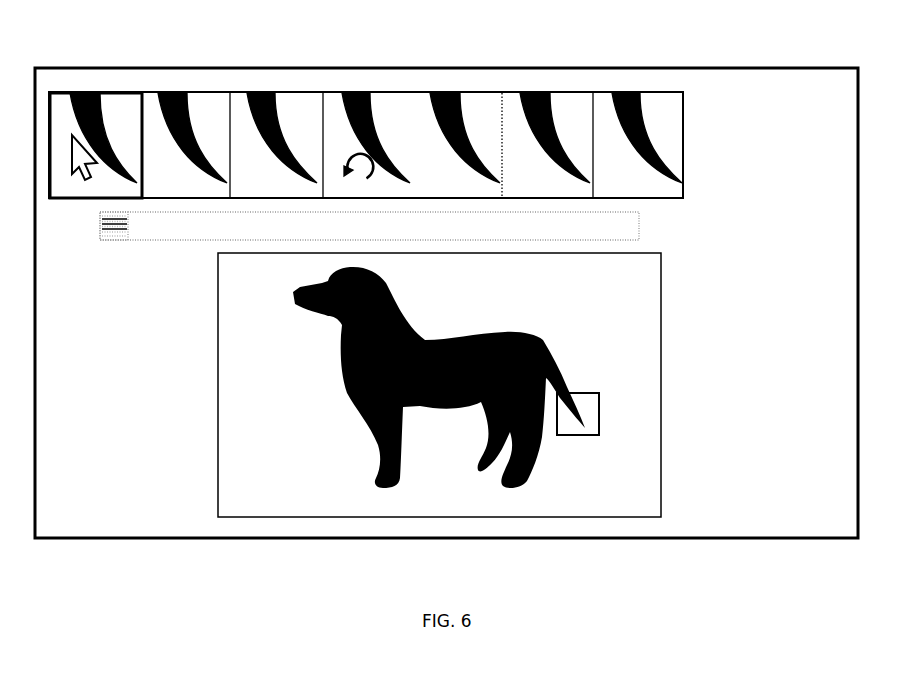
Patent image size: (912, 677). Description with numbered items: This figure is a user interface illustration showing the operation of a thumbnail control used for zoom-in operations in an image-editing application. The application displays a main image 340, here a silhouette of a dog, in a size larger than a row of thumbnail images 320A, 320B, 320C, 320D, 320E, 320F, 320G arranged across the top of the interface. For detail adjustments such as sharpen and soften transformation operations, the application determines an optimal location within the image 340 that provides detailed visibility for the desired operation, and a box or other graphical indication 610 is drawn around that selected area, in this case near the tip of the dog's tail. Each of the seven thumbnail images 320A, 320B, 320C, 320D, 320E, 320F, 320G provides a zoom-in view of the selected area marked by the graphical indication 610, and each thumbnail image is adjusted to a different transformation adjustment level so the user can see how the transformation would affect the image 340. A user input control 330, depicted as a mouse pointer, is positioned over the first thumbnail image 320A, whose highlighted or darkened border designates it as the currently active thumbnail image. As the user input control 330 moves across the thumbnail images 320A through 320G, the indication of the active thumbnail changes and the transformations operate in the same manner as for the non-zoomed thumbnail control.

The thumbnail image 320A is at (99, 85).
The thumbnail image 320B is at (189, 85).
The thumbnail image 320C is at (279, 85).
The thumbnail image 320D is at (369, 85).
The thumbnail image 320E is at (459, 85).
The thumbnail image 320F is at (551, 85).
The thumbnail image 320G is at (639, 85).
The user input control 330 is at (84, 192).
The image 340 is at (671, 386).
The graphical indication 610 is at (580, 381).